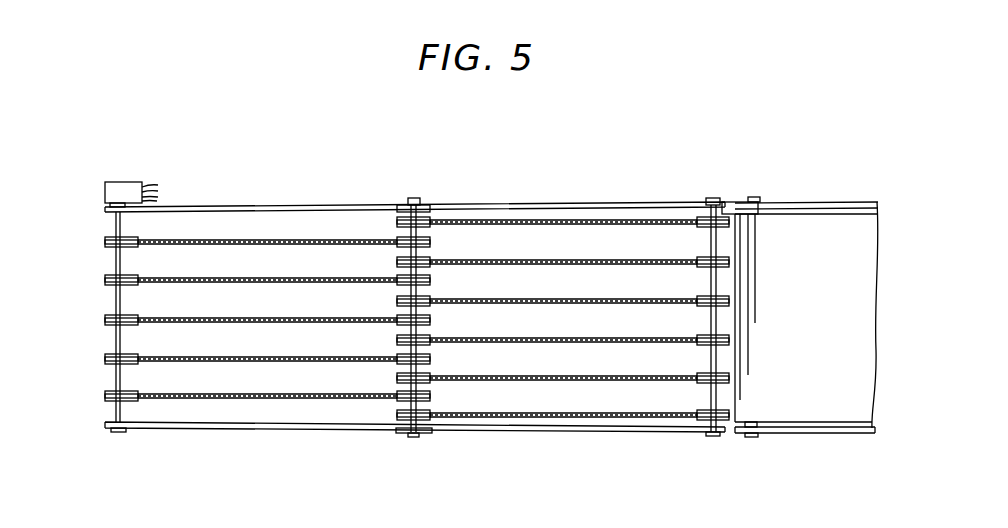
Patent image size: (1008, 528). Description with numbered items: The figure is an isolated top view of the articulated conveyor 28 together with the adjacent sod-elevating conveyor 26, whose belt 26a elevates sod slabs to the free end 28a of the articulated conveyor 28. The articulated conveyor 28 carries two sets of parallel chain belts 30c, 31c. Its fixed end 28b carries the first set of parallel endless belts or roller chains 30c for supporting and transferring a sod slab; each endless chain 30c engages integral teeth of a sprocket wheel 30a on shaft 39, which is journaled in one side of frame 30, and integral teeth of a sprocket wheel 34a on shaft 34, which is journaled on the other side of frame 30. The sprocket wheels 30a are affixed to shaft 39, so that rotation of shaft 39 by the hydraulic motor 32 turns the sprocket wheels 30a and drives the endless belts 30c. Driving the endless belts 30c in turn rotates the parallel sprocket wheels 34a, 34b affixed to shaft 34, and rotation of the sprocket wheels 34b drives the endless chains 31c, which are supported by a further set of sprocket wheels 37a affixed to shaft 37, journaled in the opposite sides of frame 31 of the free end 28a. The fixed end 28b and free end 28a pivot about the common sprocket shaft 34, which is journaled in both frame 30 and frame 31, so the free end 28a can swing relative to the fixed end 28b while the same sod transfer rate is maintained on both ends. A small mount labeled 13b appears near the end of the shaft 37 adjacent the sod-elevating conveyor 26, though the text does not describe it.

The articulated conveyor 28 is at (387, 146).
The free end of the articulated conveyor 28a is at (566, 198).
The fixed end of the articulated conveyor 28b is at (222, 200).
The frame 30 is at (308, 206).
The sprocket wheel 30a is at (104, 318).
The endless chain 30c is at (215, 240).
The frame 31 is at (503, 201).
The endless chain 31c is at (545, 225).
The hydraulic motor 32 is at (135, 182).
The shaft 34 is at (432, 386).
The sprocket wheel 34a is at (397, 240).
The sprocket wheel 34b is at (432, 297).
The shaft 37 is at (700, 411).
The sprocket wheel 37a is at (724, 293).
The shaft 39 is at (109, 426).
The bearing mount 13b is at (708, 207).
The sod-elevating conveyor 26 is at (826, 205).
The belt 26a is at (843, 385).